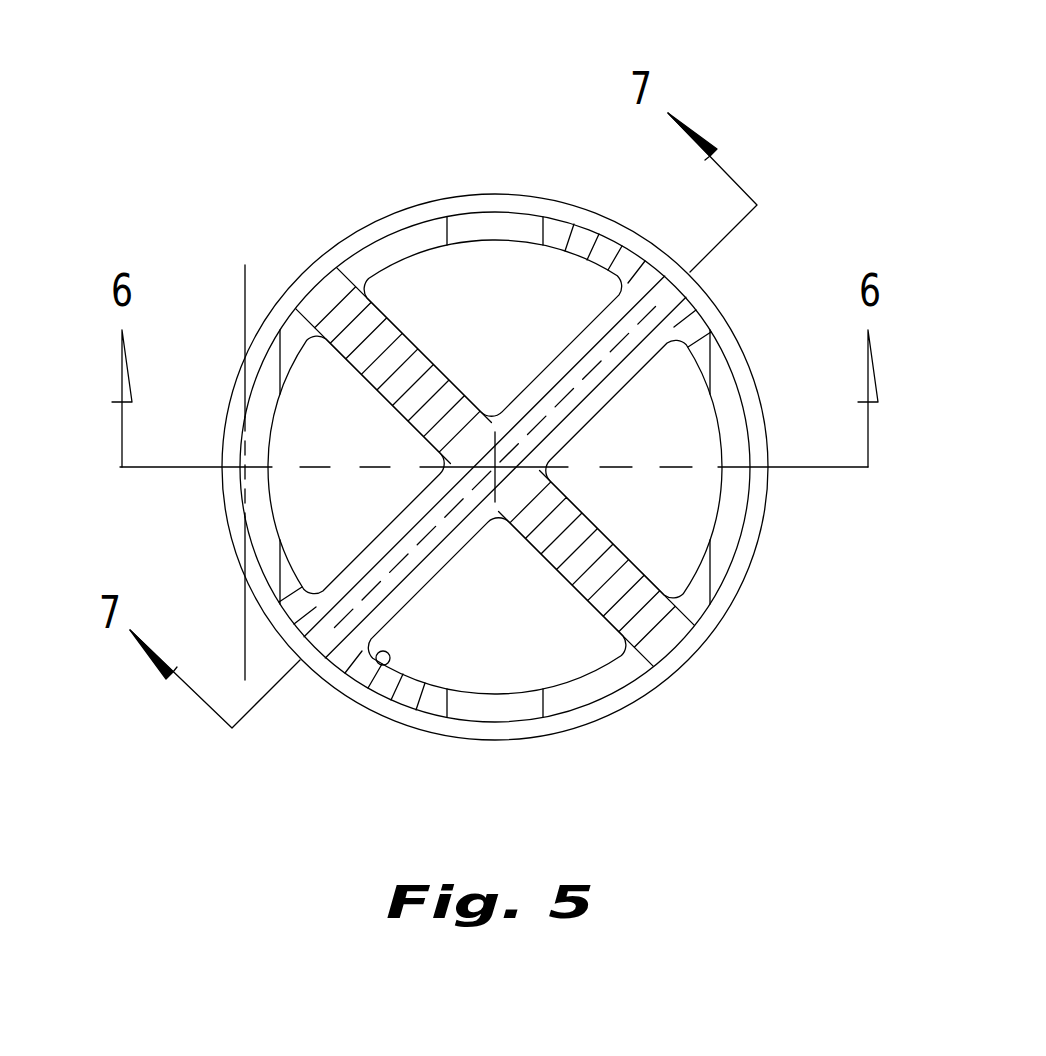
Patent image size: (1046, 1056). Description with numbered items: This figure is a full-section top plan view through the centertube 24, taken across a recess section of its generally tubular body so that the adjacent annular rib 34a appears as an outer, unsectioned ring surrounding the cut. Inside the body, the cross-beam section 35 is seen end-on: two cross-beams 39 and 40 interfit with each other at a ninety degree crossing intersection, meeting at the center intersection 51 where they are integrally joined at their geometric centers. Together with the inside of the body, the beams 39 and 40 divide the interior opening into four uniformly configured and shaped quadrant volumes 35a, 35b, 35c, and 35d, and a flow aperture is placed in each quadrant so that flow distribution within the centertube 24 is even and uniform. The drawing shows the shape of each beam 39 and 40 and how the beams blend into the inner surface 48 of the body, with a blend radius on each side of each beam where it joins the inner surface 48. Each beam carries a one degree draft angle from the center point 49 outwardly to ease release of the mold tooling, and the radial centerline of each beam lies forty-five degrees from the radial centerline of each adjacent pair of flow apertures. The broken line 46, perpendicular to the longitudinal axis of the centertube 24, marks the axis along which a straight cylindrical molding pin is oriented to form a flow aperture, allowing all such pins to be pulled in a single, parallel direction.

The centertube 24 is at (579, 172).
The annular rib 34a is at (540, 733).
The cross-beam section 35 is at (489, 378).
The quadrant volume 35a is at (465, 647).
The quadrant volume 35b is at (287, 512).
The quadrant volume 35c is at (450, 278).
The quadrant volume 35d is at (718, 499).
The cross-beam 39 is at (640, 582).
The cross-beam 40 is at (585, 404).
The broken line 46 is at (245, 292).
The inner surface 48 is at (383, 666).
The center point 49 is at (508, 512).
The center intersection 51 is at (473, 447).